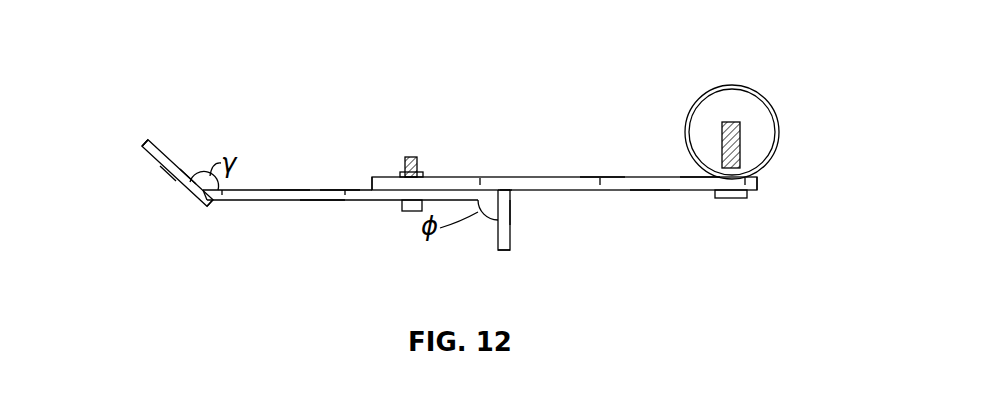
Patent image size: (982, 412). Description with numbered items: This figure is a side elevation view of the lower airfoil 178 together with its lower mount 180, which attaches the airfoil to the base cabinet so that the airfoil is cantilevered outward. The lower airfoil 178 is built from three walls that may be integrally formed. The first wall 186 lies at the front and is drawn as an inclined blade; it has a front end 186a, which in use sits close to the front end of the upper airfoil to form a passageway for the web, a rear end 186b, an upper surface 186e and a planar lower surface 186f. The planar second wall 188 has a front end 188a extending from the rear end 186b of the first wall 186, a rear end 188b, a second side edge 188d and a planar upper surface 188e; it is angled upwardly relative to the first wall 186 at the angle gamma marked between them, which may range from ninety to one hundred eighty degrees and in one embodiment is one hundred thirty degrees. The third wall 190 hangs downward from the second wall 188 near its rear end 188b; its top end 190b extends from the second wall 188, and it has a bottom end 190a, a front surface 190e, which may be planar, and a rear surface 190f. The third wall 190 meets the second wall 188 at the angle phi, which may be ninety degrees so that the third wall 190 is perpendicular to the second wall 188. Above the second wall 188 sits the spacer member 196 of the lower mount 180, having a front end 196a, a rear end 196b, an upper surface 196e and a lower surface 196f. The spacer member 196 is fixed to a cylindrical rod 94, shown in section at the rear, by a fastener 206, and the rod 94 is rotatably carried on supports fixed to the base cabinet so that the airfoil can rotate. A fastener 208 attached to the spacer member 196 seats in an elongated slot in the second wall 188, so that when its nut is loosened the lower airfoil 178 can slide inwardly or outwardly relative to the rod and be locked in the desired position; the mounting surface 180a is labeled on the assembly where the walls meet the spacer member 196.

The cylindrical rod 94 is at (758, 100).
The lower airfoil 178 is at (136, 92).
The lower mount 180 is at (644, 67).
The mounting surface 180a is at (293, 190).
The first wall 186 is at (148, 142).
The front end 186a is at (142, 146).
The rear end 186b is at (214, 205).
The upper surface 186e is at (195, 178).
The lower surface 186f is at (172, 180).
The second wall 188 is at (283, 190).
The front end 188a is at (214, 207).
The rear end 188b is at (510, 192).
The second side edge 188d is at (323, 201).
The upper surface 188e is at (343, 189).
The third wall 190 is at (512, 243).
The bottom end 190a is at (501, 251).
The top end 190b is at (497, 190).
The front surface 190e is at (490, 225).
The rear surface 190f is at (515, 210).
The spacer member 196 is at (620, 191).
The front end 196a is at (373, 177).
The rear end 196b is at (757, 191).
The upper surface 196e is at (603, 176).
The lower surface 196f is at (650, 191).
The fastener 206 is at (742, 138).
The fastener 208 is at (413, 157).